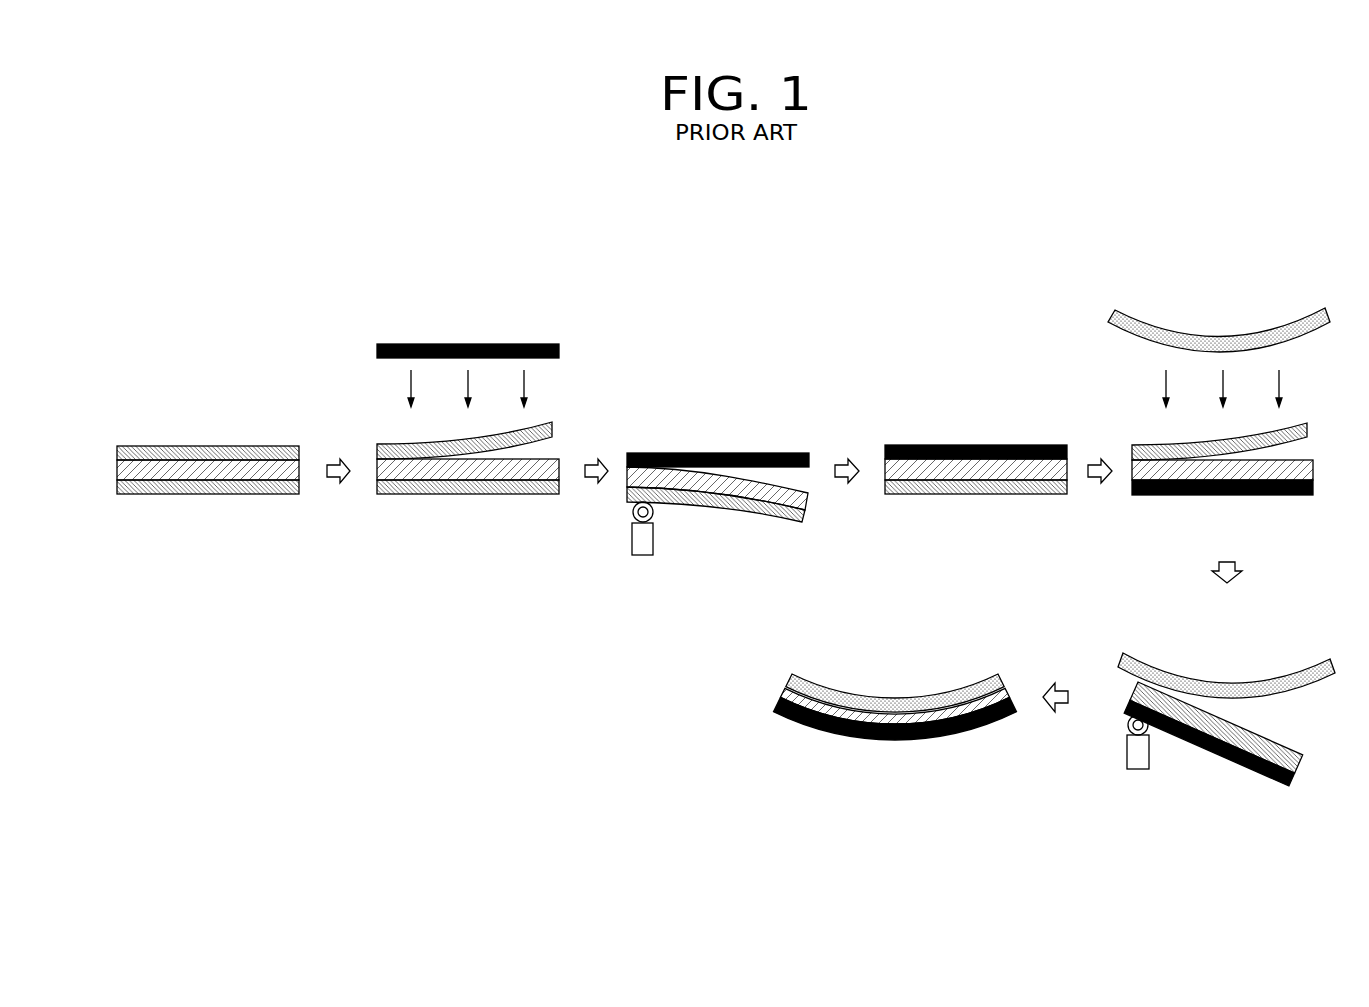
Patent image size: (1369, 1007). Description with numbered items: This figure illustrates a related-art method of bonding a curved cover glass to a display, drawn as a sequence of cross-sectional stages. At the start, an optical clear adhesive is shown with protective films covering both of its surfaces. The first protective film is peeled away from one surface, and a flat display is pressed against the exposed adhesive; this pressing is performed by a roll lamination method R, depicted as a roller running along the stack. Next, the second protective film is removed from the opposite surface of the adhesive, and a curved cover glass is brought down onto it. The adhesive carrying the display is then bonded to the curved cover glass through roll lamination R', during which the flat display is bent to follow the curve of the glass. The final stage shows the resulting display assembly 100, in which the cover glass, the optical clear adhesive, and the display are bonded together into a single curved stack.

The display assembly 100 is at (860, 699).
The roll lamination method R is at (642, 557).
The roll lamination R' is at (1139, 770).